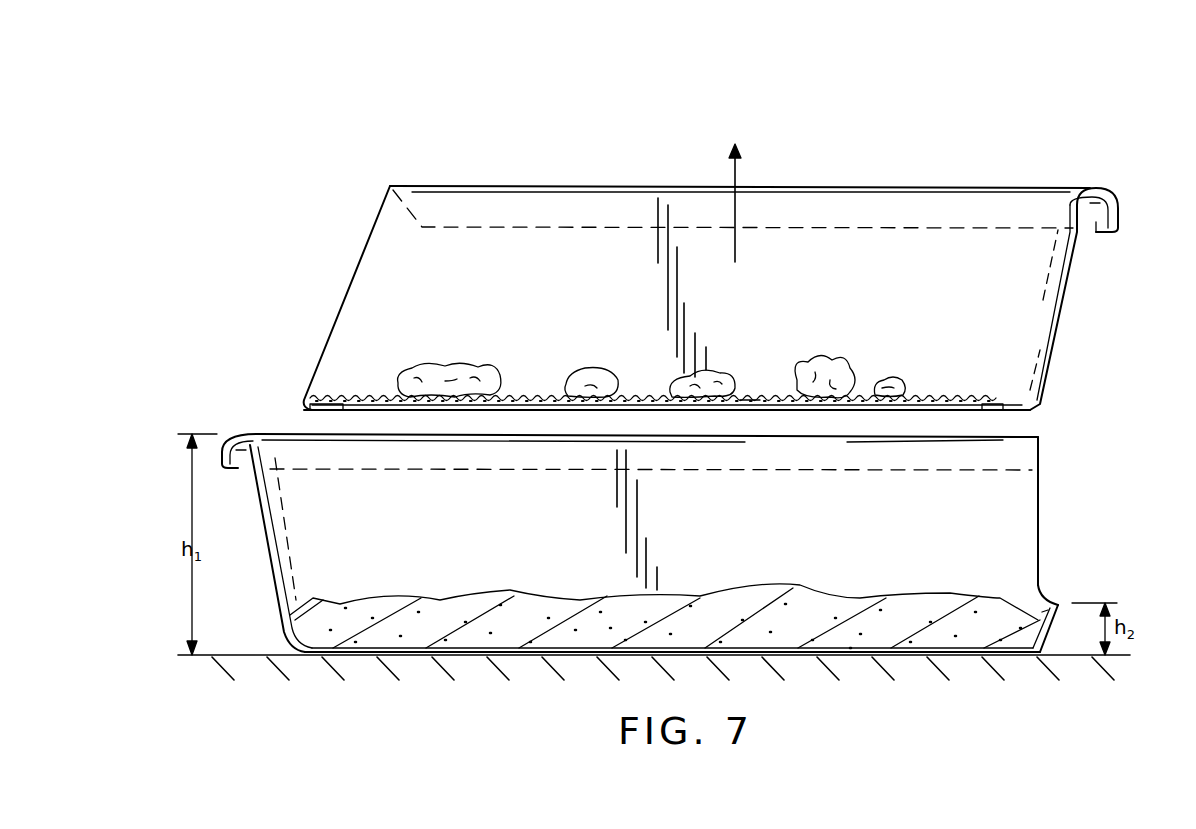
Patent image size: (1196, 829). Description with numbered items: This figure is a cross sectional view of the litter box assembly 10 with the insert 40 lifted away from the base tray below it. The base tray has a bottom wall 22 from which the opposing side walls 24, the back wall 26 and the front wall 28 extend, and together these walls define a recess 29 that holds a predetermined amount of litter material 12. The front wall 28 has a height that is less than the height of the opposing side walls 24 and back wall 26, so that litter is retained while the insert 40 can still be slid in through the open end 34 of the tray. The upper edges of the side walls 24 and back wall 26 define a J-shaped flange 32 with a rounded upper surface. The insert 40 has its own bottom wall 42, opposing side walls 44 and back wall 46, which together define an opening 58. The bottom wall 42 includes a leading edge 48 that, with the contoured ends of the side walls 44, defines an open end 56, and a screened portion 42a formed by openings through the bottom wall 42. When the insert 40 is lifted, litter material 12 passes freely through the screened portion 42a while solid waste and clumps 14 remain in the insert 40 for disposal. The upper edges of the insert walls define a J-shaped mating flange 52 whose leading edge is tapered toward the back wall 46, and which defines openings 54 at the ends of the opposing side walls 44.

The litter box assembly 10 is at (912, 102).
The litter material 12 is at (542, 602).
The solid waste and clumps 14 is at (470, 370).
The bottom wall 22 is at (735, 650).
The opposing side walls 24 is at (1005, 497).
The back wall 26 is at (678, 533).
The front wall 28 is at (1063, 622).
The recess 29 is at (908, 576).
The flange 32 is at (246, 432).
The open end 34 is at (1036, 556).
The insert 40 is at (690, 224).
The bottom wall 42 is at (322, 400).
The screened portion 42a is at (752, 396).
The opposing side walls 44 is at (590, 262).
The back wall 46 is at (1066, 287).
The leading edge 48 is at (302, 402).
The mating flange 52 is at (1097, 189).
The openings 54 is at (1097, 230).
The open end 56 is at (373, 254).
The opening 58 is at (848, 254).